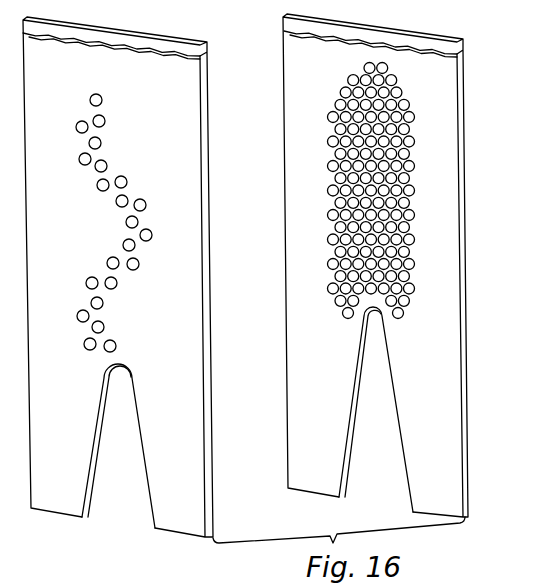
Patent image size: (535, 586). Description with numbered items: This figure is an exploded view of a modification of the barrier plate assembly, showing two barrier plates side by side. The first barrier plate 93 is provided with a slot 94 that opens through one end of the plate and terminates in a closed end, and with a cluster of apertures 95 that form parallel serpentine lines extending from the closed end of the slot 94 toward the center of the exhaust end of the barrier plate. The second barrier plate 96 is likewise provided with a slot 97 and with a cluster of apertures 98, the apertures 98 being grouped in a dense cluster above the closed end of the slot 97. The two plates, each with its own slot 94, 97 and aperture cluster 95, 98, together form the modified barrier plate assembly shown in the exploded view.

The barrier plate 93 is at (193, 87).
The slot 94 is at (138, 450).
The cluster of apertures 95 is at (118, 284).
The barrier plate 96 is at (452, 79).
The slot 97 is at (387, 393).
The cluster of apertures 98 is at (414, 242).